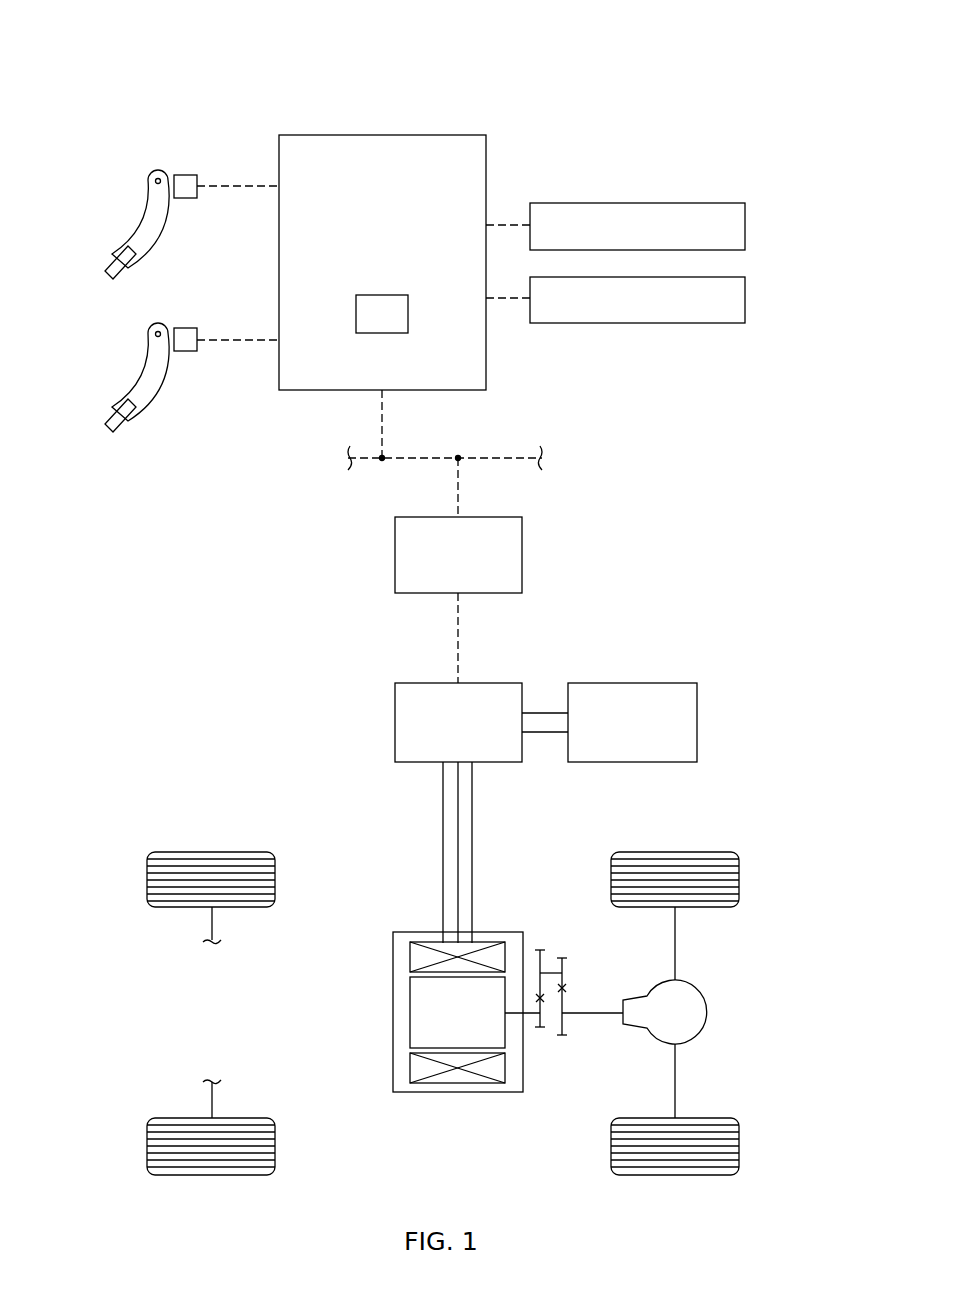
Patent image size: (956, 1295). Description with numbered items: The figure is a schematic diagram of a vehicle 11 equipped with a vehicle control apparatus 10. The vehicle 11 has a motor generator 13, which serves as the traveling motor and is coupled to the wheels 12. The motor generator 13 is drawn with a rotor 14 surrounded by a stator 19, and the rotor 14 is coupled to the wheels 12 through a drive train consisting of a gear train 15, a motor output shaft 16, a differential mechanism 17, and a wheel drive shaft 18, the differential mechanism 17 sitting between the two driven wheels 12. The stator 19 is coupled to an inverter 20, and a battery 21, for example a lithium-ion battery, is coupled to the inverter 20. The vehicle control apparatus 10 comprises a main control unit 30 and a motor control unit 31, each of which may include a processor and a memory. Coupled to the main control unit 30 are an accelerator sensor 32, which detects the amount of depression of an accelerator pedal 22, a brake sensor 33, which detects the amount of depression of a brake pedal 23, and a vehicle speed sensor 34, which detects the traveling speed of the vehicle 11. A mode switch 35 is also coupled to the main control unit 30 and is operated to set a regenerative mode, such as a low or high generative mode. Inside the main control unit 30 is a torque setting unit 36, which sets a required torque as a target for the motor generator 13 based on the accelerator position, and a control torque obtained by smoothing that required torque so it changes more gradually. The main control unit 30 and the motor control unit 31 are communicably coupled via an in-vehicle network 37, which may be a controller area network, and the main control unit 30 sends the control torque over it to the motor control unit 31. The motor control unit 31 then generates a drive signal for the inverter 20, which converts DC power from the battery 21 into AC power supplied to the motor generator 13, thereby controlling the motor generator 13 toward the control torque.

The vehicle control apparatus 10 is at (592, 85).
The vehicle 11 is at (685, 68).
The wheels 12 is at (741, 873).
The motor generator 13 is at (450, 1095).
The rotor 14 is at (408, 996).
The gear train 15 is at (550, 945).
The motor output shaft 16 is at (595, 1011).
The differential mechanism 17 is at (708, 1013).
The wheel drive shaft 18 is at (678, 950).
The stator 19 is at (408, 951).
The inverter 20 is at (495, 682).
The battery 21 is at (672, 682).
The accelerator pedal 22 is at (112, 258).
The brake pedal 23 is at (112, 412).
The main control unit 30 is at (448, 133).
The motor control unit 31 is at (522, 535).
The accelerator sensor 32 is at (183, 173).
The brake sensor 33 is at (183, 326).
The vehicle speed sensor 34 is at (747, 219).
The mode switch 35 is at (747, 292).
The torque setting unit 36 is at (382, 314).
The in-vehicle network 37 is at (508, 452).